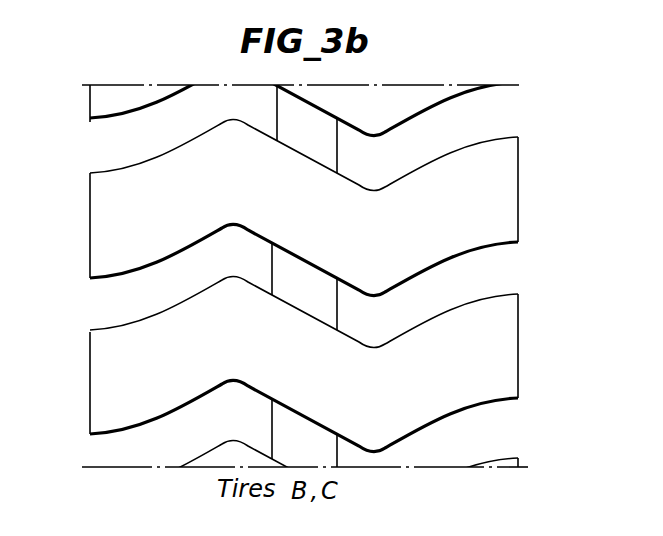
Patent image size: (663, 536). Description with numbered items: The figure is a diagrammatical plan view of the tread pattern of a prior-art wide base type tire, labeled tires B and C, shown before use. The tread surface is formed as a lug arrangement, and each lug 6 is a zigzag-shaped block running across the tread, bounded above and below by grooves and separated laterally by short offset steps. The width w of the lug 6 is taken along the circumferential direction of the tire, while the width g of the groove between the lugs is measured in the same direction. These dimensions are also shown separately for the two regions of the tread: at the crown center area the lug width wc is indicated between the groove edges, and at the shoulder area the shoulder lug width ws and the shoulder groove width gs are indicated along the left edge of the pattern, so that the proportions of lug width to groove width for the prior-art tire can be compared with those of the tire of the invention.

The lug 6 is at (96, 207).
The width of the lug w is at (190, 148).
The width of a groove g is at (190, 289).
The shoulder groove width gs is at (58, 278).
The shoulder lug width ws is at (90, 434).
The crown center lug width wc is at (303, 320).